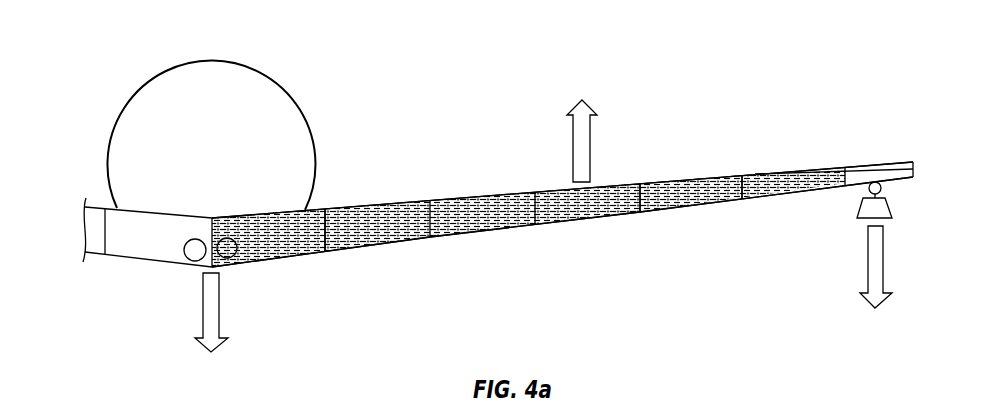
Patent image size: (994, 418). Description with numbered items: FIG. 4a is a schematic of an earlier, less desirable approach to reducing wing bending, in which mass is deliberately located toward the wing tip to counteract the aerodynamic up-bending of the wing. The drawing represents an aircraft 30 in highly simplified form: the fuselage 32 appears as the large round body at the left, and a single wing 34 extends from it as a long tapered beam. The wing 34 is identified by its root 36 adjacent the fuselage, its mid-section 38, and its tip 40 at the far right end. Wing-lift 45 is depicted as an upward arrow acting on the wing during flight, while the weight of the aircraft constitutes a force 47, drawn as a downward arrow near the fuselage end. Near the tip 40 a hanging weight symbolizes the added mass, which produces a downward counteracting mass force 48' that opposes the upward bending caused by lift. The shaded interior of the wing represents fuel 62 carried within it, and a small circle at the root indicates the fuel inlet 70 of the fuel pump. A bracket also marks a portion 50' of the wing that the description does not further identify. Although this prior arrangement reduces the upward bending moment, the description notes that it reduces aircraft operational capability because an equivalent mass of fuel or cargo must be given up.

The aircraft 30 is at (556, 53).
The fuselage 32 is at (286, 83).
The wing 34 is at (486, 191).
The root 36 is at (318, 204).
The mid-section 38 is at (481, 262).
The tip 40 is at (908, 150).
The wing-lift 45 is at (582, 128).
The force 47 is at (211, 326).
The downward counteracting mass force 48' is at (876, 281).
The boom segment 50' is at (691, 217).
The fuel 62 is at (586, 205).
The fuel inlet 70 is at (243, 255).